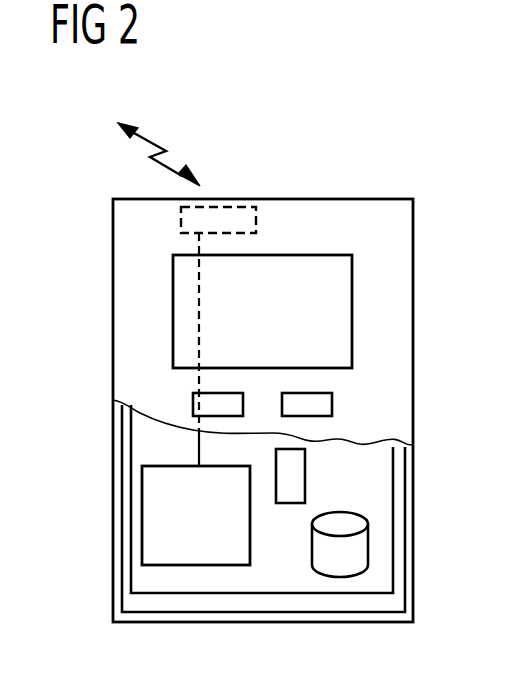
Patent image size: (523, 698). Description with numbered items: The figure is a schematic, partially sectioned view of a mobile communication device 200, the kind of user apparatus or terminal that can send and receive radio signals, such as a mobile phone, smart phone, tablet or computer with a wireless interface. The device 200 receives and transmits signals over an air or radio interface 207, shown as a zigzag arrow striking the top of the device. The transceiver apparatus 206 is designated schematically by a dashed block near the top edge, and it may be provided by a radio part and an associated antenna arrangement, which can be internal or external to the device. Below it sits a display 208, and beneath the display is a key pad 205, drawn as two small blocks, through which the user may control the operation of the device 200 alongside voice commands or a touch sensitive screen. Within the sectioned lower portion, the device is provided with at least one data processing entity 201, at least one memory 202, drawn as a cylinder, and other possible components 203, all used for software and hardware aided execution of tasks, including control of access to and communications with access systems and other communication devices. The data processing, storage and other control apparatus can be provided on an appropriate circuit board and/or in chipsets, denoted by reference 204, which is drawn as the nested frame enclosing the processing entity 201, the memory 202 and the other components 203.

The communication device 200 is at (260, 199).
The data processing entity 201 is at (142, 512).
The memory 202 is at (338, 577).
The other possible components 203 is at (305, 475).
The circuit board and/or chipsets 204 is at (133, 580).
The key pad 205 is at (193, 398).
The transceiver apparatus 206 is at (256, 220).
The air or radio interface 207 is at (152, 143).
The display 208 is at (173, 311).